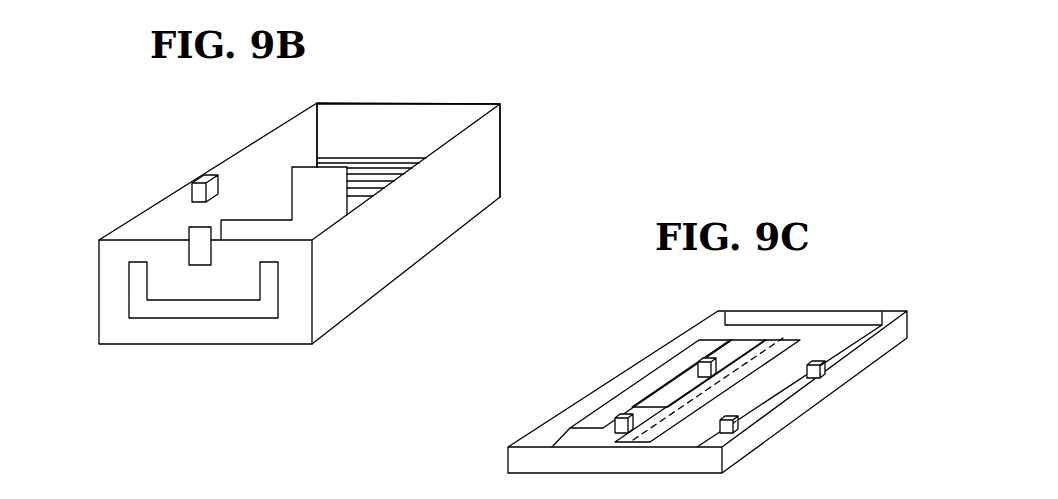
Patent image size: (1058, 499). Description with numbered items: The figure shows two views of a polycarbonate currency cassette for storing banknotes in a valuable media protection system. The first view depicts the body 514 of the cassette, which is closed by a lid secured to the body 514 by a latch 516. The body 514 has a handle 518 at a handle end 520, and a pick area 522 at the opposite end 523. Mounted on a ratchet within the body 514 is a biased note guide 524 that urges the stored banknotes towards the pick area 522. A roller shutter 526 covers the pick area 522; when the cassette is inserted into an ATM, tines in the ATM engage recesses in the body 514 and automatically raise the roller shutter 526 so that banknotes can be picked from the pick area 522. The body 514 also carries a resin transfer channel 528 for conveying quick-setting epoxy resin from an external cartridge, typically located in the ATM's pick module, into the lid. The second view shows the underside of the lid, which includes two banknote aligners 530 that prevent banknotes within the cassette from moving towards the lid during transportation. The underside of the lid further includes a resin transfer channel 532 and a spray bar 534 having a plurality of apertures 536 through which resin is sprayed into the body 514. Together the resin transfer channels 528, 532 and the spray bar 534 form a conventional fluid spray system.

In FIG. 9B, the body 514 is at (335, 315).
In FIG. 9B, the latch 516 is at (195, 232).
In FIG. 9B, the handle 518 is at (192, 312).
In FIG. 9B, the handle end 520 is at (110, 322).
In FIG. 9B, the pick area 522 is at (376, 160).
In FIG. 9B, the opposite end 523 is at (471, 103).
In FIG. 9B, the biased note guide 524 is at (293, 185).
In FIG. 9B, the roller shutter 526 is at (355, 162).
In FIG. 9B, the resin transfer channel 528 is at (205, 172).
In FIG. 9C, the banknote aligners 530 is at (857, 327).
In FIG. 9C, the resin transfer channel 532 is at (652, 398).
In FIG. 9C, the spray bar 534 is at (697, 380).
In FIG. 9C, the apertures 536 is at (750, 367).